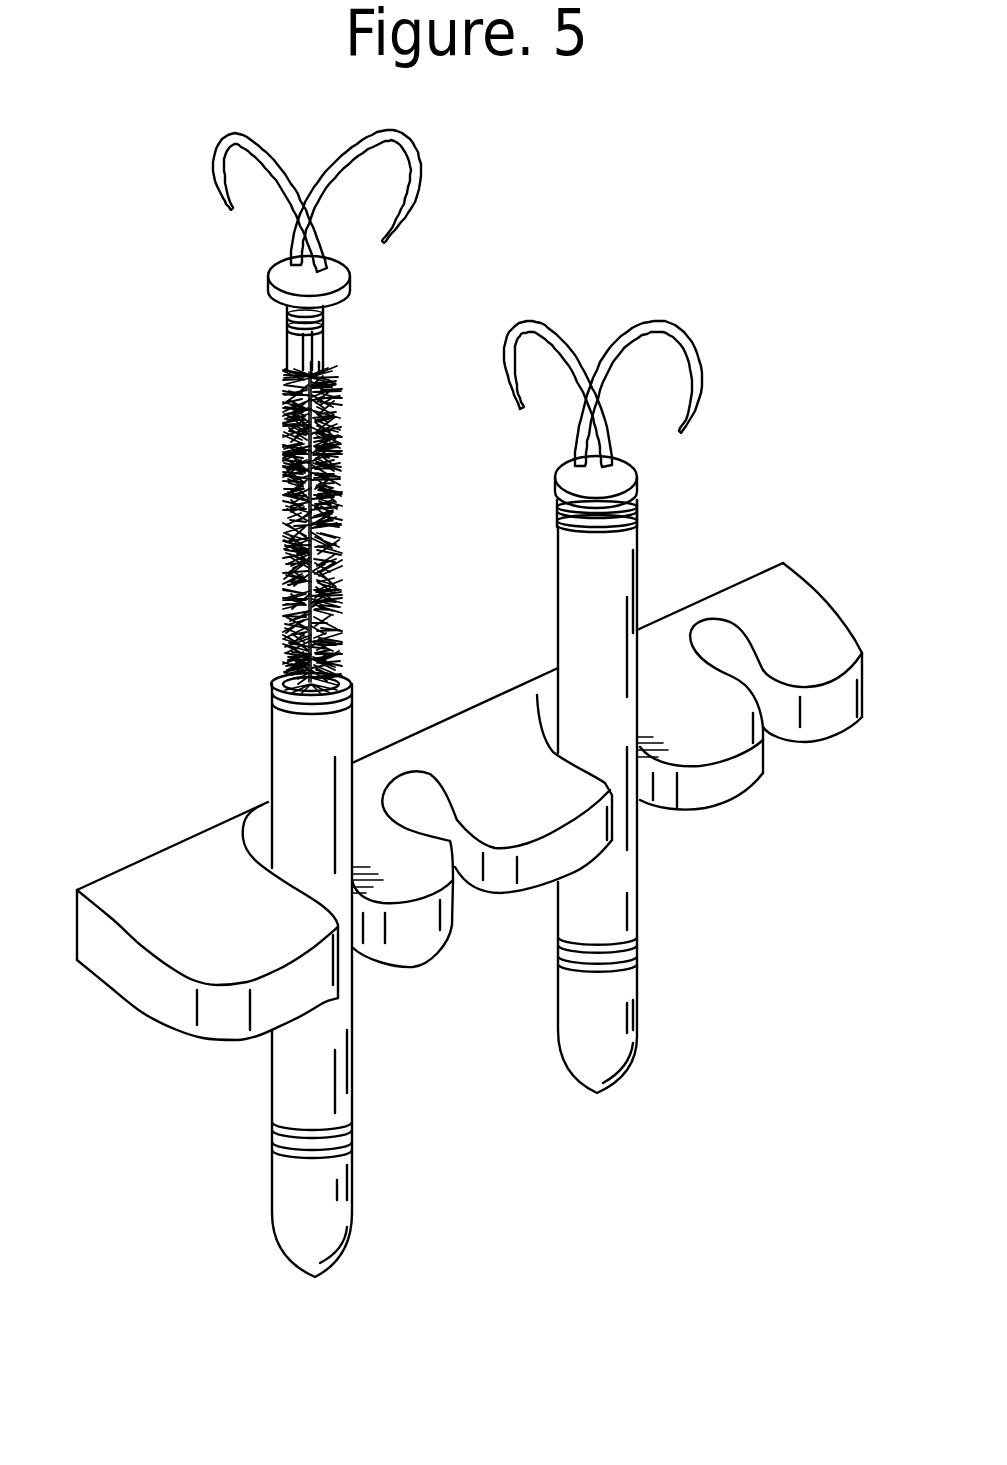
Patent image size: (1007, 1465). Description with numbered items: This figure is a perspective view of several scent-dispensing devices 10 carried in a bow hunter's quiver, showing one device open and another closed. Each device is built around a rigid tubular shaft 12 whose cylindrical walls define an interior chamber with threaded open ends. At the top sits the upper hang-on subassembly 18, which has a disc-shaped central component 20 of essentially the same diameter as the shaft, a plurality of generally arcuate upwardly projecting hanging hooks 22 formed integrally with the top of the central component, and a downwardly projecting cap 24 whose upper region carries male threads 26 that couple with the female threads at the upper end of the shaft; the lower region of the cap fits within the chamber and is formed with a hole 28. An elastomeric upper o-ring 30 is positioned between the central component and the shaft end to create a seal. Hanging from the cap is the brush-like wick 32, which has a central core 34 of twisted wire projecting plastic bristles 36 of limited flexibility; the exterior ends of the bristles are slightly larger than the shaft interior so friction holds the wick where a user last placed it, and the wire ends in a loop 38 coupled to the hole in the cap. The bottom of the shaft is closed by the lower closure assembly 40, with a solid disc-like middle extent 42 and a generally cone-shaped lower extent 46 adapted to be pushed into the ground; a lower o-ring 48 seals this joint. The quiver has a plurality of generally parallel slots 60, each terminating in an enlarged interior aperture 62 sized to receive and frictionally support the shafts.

The container assembly 10 is at (203, 672).
The shaft 12 is at (273, 733).
The upper hang-on subassembly 18 is at (201, 168).
The disc-shaped central component 20 is at (270, 302).
The hanging hooks 22 is at (327, 143).
The cap 24 is at (323, 334).
The male threads 26 is at (327, 310).
The hole 28 is at (326, 366).
The upper o-ring 30 is at (637, 527).
The wick 32 is at (283, 608).
The central core 34 is at (342, 458).
The bristles 36 is at (337, 530).
The loop 38 is at (288, 370).
The lower closure assembly 40 is at (293, 1240).
The middle extent 42 is at (340, 1170).
The lower extent 46 is at (317, 1268).
The lower o-ring 48 is at (305, 1150).
The slots 60 is at (487, 887).
The enlarged interior aperture 62 is at (247, 847).